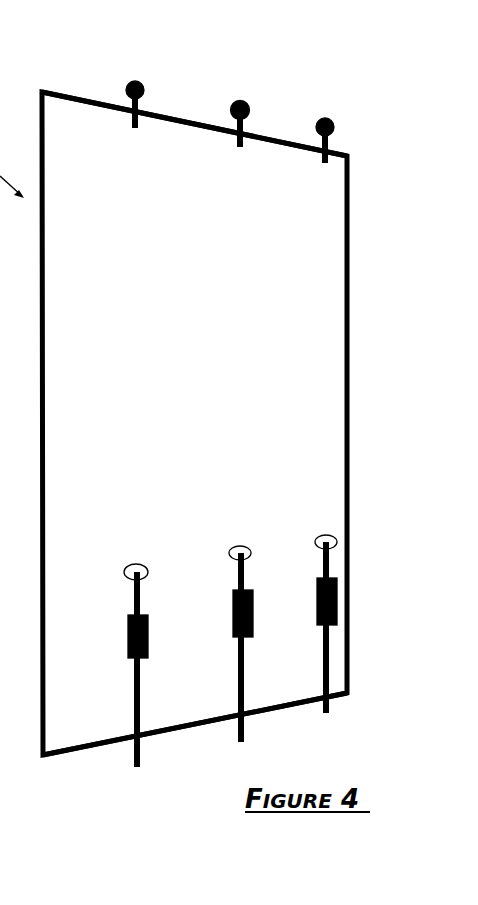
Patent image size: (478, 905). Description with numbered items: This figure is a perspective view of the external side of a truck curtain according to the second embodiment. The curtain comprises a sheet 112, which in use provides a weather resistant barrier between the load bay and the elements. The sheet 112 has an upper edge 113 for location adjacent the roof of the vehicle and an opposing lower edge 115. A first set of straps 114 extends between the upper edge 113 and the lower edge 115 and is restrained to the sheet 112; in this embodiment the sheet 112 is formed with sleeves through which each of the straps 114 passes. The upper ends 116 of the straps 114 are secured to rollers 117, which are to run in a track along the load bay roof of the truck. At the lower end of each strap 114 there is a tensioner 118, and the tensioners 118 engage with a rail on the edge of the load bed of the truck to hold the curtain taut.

The sheet 112 is at (322, 262).
The upper edge 113 is at (72, 95).
The first set of straps 114 is at (137, 715).
The lower edge 115 is at (187, 728).
The upper ends 116 is at (130, 112).
The rollers 117 is at (142, 84).
The tensioners 118 is at (130, 655).